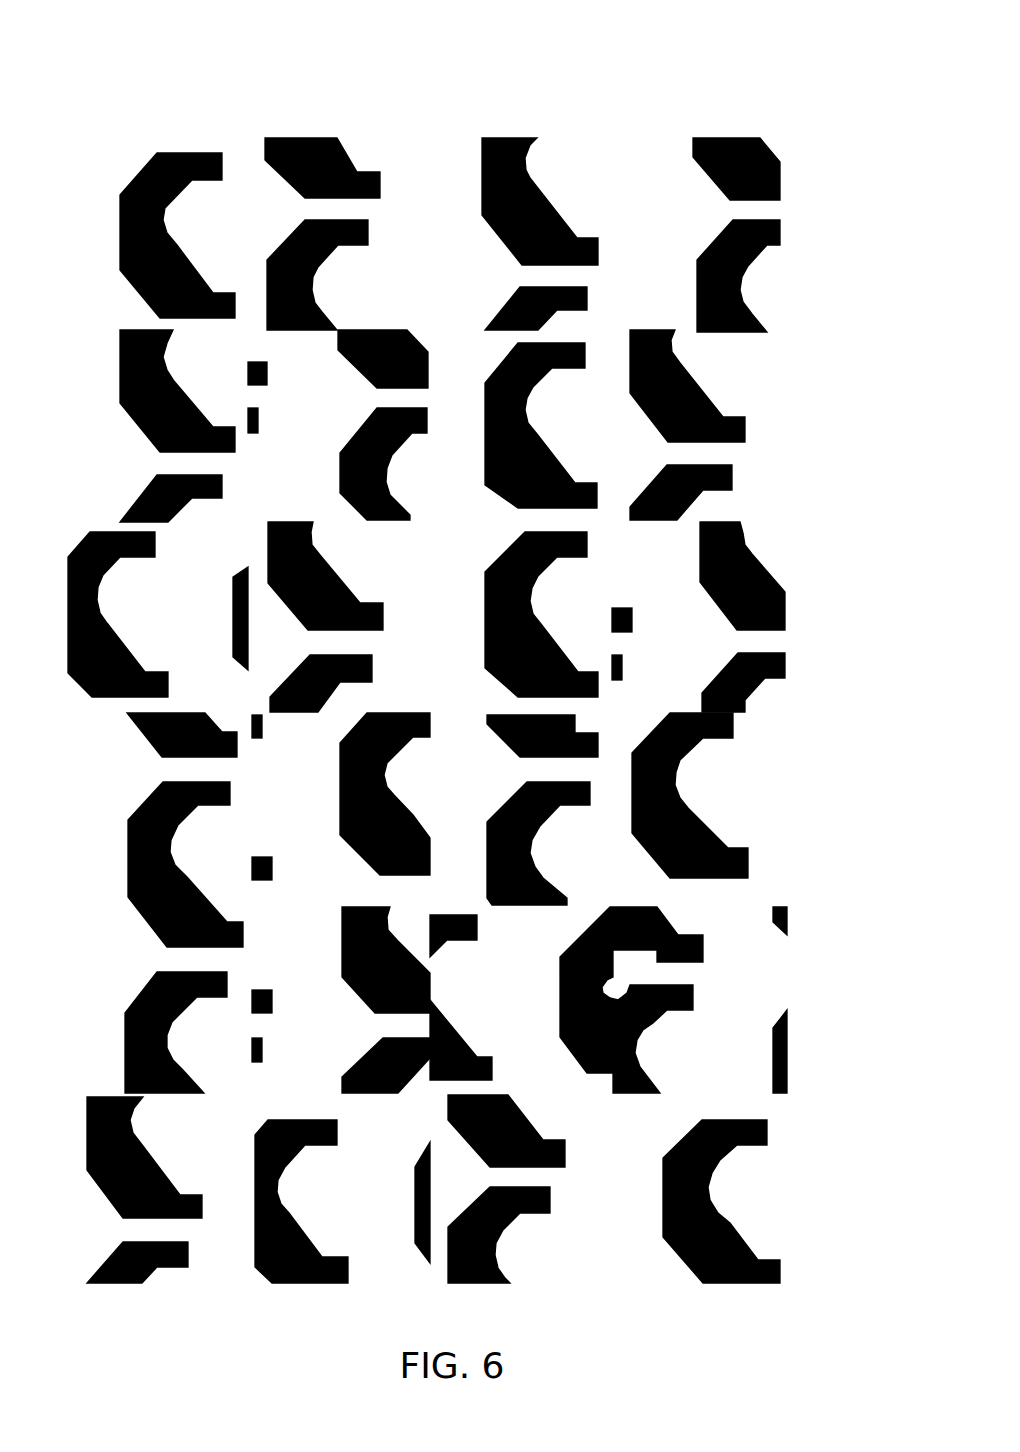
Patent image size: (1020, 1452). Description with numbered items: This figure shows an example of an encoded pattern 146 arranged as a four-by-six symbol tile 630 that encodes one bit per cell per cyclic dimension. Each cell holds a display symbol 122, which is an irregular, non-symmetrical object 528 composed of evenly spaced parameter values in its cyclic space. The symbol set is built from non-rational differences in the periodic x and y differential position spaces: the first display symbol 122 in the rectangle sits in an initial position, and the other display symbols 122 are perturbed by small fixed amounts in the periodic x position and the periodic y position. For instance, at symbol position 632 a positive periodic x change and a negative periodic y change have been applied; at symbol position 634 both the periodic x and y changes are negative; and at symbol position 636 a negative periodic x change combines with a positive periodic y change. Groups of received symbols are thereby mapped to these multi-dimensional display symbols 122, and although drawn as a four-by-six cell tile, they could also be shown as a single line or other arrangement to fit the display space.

The encoded pattern 146 is at (118, 32).
The display symbol 122 is at (124, 152).
The irregular, non-symmetrical object 528 is at (120, 231).
The symbol position 632 is at (397, 144).
The symbol position 634 is at (569, 144).
The symbol position 636 is at (673, 144).
The symbol tile 630 is at (828, 260).